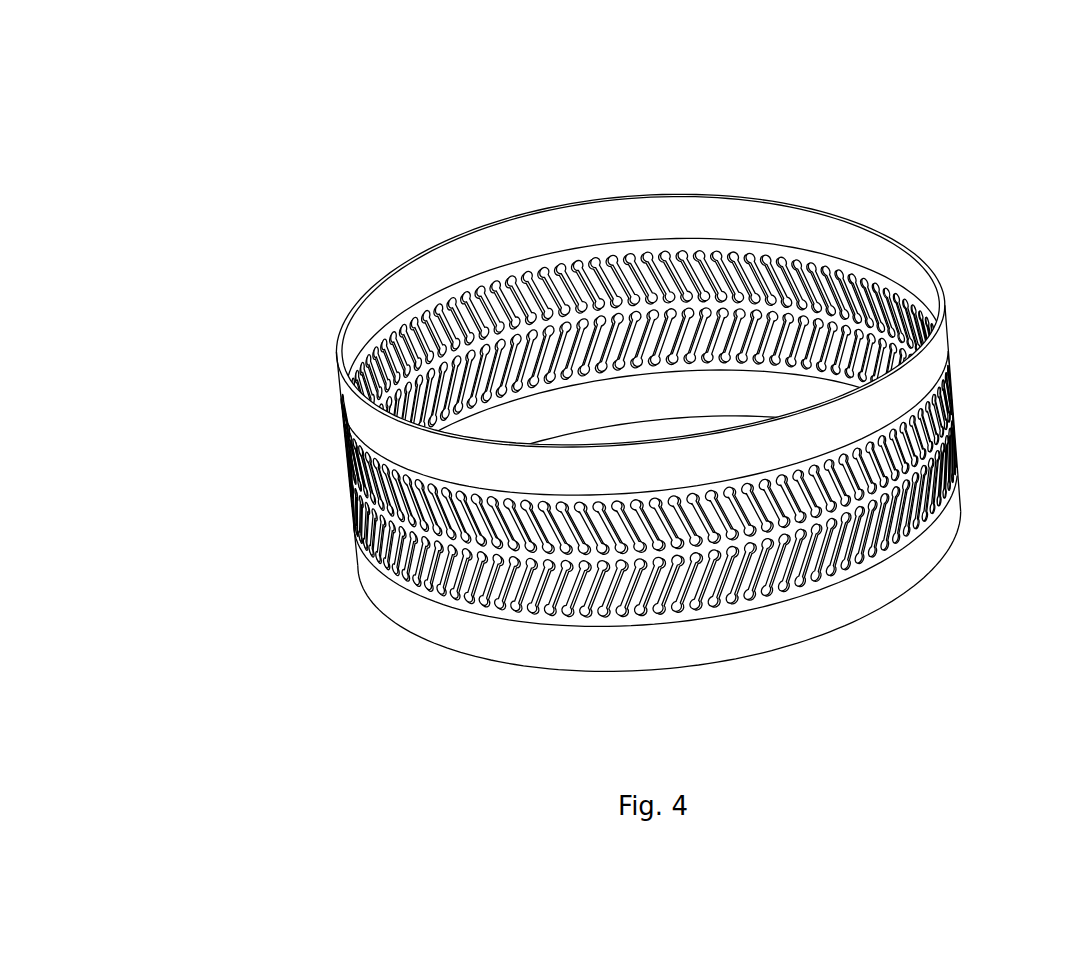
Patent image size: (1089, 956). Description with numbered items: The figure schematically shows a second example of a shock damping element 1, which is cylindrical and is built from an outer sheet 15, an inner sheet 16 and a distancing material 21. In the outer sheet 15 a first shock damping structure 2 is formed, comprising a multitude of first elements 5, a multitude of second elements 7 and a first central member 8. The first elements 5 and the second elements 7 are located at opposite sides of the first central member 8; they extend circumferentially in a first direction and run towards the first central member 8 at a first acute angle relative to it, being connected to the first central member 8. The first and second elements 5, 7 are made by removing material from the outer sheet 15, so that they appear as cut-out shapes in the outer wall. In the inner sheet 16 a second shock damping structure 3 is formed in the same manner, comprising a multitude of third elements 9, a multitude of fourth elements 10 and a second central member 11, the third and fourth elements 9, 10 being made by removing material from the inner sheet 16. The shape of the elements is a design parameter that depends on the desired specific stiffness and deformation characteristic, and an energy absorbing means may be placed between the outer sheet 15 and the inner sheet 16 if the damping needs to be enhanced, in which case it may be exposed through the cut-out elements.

The shock damping element 1 is at (558, 351).
The first shock damping structure 2 is at (550, 488).
The second shock damping structure 3 is at (641, 279).
The first elements 5 is at (564, 610).
The second elements 7 is at (723, 637).
The first central member 8 is at (475, 622).
The third elements 9 is at (716, 194).
The fourth elements 10 is at (801, 253).
The second central member 11 is at (700, 383).
The outer sheet 15 is at (698, 551).
The inner sheet 16 is at (644, 289).
The distancing material 21 is at (585, 320).